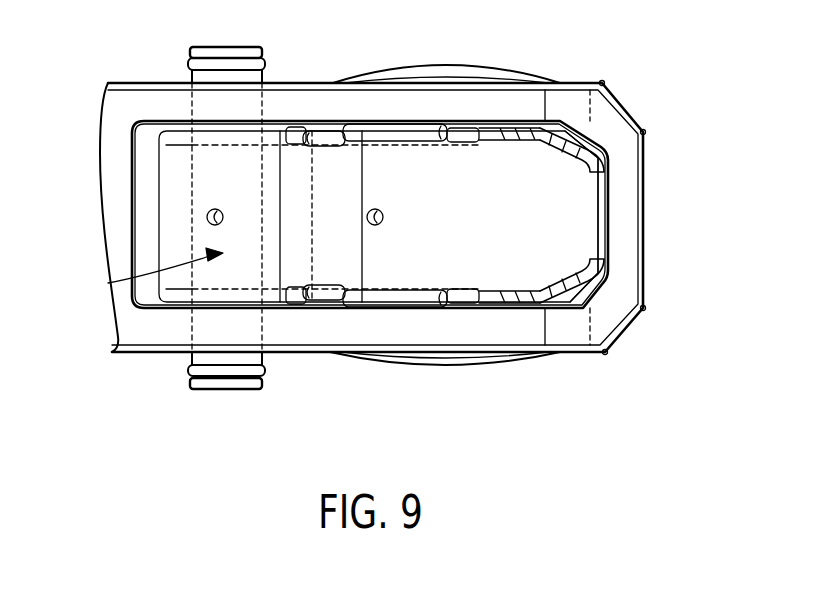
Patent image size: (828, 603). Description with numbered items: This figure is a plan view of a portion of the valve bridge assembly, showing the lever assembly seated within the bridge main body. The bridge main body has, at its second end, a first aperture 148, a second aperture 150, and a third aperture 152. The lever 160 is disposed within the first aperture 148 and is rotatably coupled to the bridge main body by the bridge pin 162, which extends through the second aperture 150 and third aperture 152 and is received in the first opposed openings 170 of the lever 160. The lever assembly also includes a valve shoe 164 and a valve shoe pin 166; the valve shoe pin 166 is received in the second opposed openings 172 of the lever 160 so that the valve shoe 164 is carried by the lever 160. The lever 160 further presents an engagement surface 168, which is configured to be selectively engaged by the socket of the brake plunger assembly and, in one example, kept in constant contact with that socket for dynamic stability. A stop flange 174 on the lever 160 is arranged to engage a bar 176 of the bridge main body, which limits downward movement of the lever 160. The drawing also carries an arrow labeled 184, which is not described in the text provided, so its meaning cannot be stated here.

The first aperture 148 is at (594, 148).
The second aperture 150 is at (190, 330).
The third aperture 152 is at (200, 101).
The lever 160 is at (293, 165).
The bridge pin 162 is at (233, 384).
The valve shoe 164 is at (398, 363).
The valve shoe pin 166 is at (427, 306).
The engagement surface 168 is at (518, 245).
The first opposed openings 170 is at (163, 121).
The second opposed openings 172 is at (355, 127).
The stop flange 174 is at (570, 192).
The bar 176 is at (623, 226).
The flow direction arrow 184 is at (149, 272).